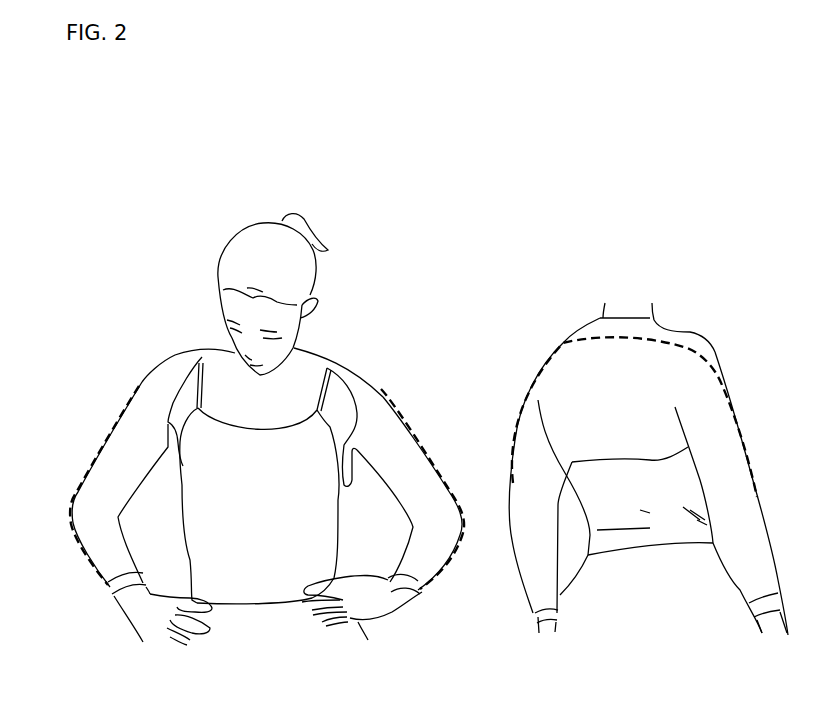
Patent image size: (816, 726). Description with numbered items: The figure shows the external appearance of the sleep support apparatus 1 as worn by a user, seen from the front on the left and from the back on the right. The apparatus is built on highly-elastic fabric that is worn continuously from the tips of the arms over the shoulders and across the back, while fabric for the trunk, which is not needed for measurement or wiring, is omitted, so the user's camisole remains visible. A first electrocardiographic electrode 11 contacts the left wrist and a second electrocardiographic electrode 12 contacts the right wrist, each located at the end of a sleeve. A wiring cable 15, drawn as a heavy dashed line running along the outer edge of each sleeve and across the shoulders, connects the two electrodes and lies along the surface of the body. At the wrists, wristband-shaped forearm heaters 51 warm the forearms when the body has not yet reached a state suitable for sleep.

The sleep support apparatus 1 is at (400, 392).
The wiring cable 15 is at (100, 445).
The forearm heaters 51 is at (112, 600).
The first electrocardiographic electrode 11 is at (259, 483).
The second electrocardiographic electrode 12 is at (267, 486).